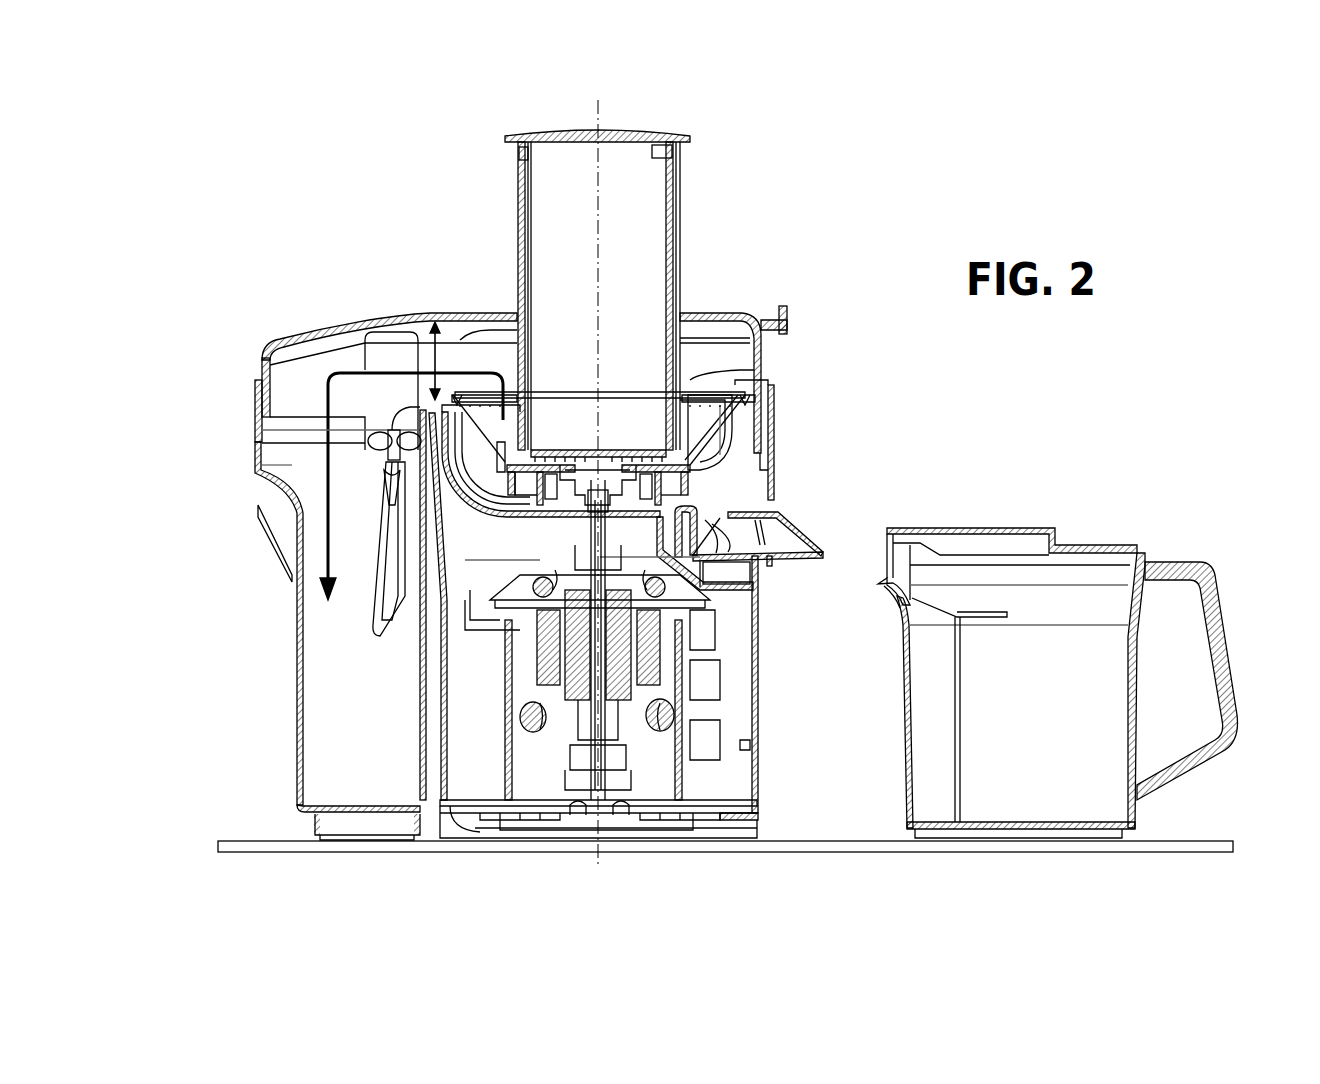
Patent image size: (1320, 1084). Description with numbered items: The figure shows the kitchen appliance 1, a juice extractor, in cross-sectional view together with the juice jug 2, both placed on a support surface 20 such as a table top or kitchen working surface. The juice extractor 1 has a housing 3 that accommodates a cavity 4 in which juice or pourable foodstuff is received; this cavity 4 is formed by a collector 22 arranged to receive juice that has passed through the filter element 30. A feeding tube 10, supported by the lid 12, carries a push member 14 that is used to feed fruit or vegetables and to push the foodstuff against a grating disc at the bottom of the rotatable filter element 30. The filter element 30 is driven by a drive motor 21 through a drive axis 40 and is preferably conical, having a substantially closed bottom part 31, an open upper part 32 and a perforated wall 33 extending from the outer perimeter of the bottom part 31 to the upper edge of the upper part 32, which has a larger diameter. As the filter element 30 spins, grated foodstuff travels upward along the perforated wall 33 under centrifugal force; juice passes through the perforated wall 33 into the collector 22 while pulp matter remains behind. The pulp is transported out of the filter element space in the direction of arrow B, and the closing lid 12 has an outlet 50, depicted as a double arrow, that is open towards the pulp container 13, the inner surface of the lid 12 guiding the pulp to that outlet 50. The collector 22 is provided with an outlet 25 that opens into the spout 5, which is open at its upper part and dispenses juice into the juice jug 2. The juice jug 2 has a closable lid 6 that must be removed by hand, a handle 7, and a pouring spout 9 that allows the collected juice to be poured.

The kitchen appliance 1 is at (222, 262).
The juice jug 2 is at (1112, 498).
The housing 3 is at (757, 723).
The cavity 4 is at (478, 457).
The spout 5 is at (803, 533).
The lid 6 is at (995, 543).
The handle 7 is at (1228, 672).
The pouring spout 9 is at (900, 568).
The feeding tube 10 is at (518, 228).
The lid 12 is at (732, 318).
The pulp container 13 is at (343, 727).
The push member 14 is at (548, 193).
The support surface 20 is at (247, 840).
The drive motor 21 is at (585, 675).
The collector 22 is at (478, 500).
The outlet 25 is at (708, 535).
The filter element 30 is at (698, 425).
The bottom part 31 is at (688, 470).
The upper part 32 is at (712, 392).
The perforated wall 33 is at (498, 418).
The drive axis 40 is at (598, 655).
The outlet 50 is at (433, 357).
The arrow B is at (322, 548).